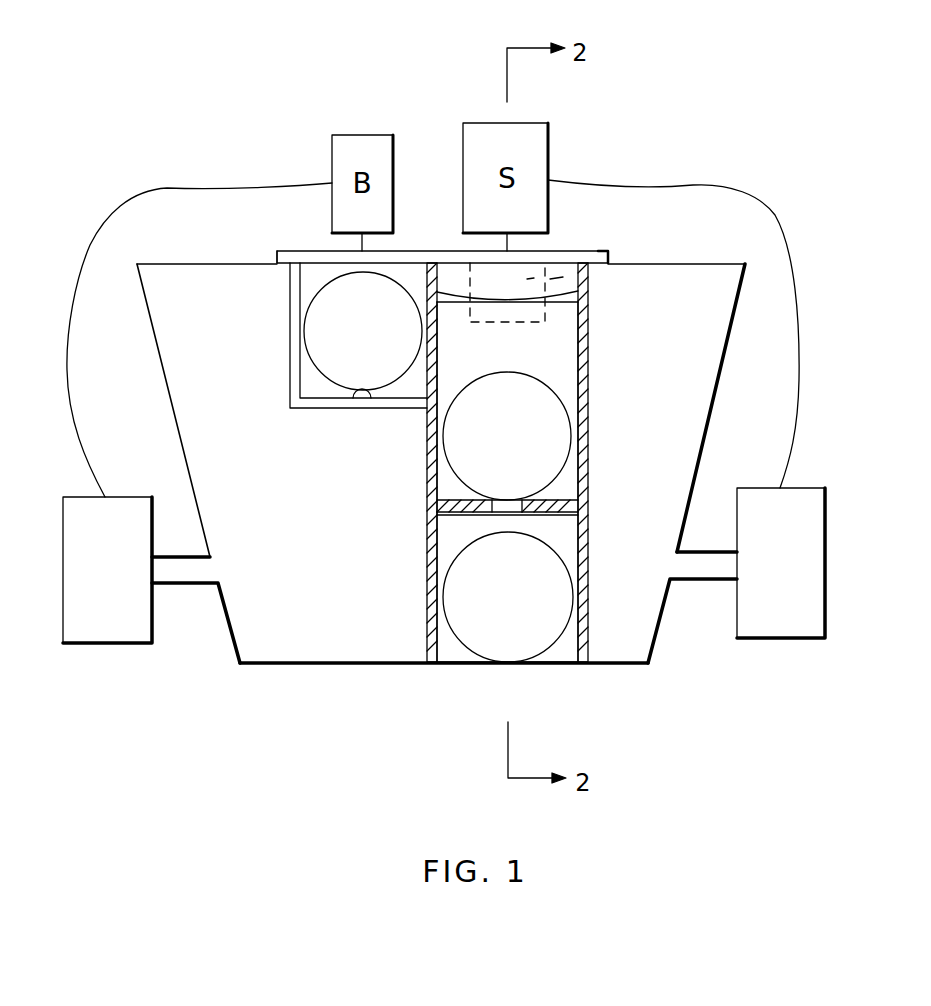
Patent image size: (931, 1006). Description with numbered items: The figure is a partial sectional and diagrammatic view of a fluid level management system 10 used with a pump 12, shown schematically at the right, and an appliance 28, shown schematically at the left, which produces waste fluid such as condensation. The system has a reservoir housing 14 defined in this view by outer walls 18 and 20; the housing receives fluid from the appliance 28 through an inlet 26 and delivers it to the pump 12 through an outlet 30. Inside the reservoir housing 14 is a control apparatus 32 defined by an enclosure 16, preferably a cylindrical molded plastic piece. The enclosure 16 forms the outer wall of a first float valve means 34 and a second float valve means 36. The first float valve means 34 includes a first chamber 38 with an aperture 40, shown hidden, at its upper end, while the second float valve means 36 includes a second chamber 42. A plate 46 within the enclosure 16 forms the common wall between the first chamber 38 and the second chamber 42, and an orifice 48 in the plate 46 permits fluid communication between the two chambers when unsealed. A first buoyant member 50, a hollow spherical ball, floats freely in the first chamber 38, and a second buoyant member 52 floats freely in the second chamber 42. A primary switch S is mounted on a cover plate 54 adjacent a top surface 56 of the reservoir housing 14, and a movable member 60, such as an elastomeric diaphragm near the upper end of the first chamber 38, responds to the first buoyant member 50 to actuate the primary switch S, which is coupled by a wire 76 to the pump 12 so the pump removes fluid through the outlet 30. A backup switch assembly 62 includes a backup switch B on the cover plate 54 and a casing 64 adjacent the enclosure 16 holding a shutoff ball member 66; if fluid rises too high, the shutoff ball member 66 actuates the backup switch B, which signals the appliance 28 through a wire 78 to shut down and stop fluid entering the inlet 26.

The fluid level management system 10 is at (255, 120).
The pump 12 is at (768, 579).
The reservoir housing 14 is at (280, 664).
The enclosure 16 is at (589, 320).
The outer wall 18 is at (708, 428).
The outer wall 20 is at (162, 365).
The inlet 26 is at (193, 584).
The appliance 28 is at (93, 585).
The outlet 30 is at (688, 581).
The control apparatus 32 is at (408, 488).
The first float valve means 34 is at (493, 454).
The second float valve means 36 is at (494, 613).
The first chamber 38 is at (452, 370).
The aperture 40 is at (587, 234).
The second chamber 42 is at (450, 528).
The plate 46 is at (557, 500).
The orifice 48 is at (507, 512).
The first buoyant member 50 is at (560, 397).
The second buoyant member 52 is at (548, 648).
The cover plate 54 is at (412, 251).
The top surface 56 is at (600, 264).
The movable member 60 is at (450, 293).
The backup switch assembly 62 is at (327, 242).
The casing 64 is at (290, 352).
The shutoff ball member 66 is at (347, 365).
The wire 76 is at (745, 185).
The wire 78 is at (120, 205).